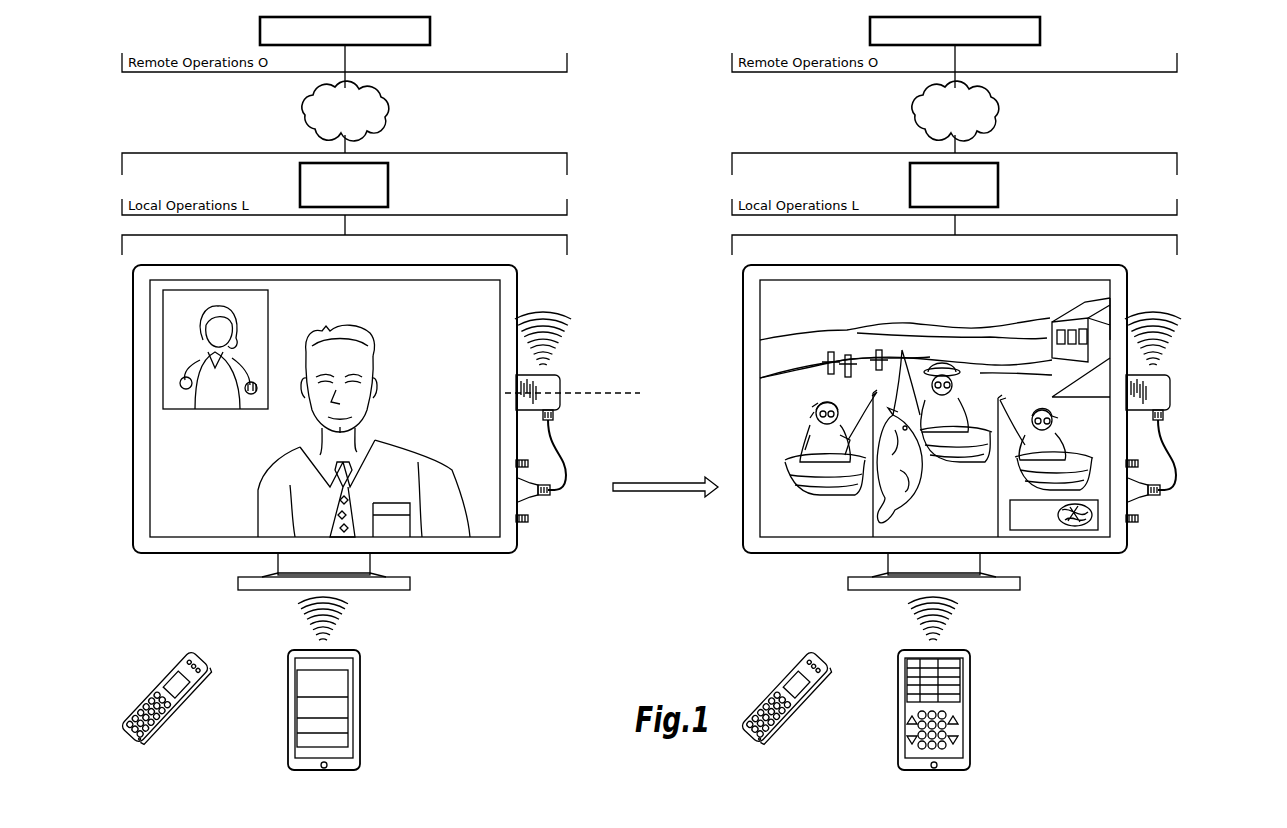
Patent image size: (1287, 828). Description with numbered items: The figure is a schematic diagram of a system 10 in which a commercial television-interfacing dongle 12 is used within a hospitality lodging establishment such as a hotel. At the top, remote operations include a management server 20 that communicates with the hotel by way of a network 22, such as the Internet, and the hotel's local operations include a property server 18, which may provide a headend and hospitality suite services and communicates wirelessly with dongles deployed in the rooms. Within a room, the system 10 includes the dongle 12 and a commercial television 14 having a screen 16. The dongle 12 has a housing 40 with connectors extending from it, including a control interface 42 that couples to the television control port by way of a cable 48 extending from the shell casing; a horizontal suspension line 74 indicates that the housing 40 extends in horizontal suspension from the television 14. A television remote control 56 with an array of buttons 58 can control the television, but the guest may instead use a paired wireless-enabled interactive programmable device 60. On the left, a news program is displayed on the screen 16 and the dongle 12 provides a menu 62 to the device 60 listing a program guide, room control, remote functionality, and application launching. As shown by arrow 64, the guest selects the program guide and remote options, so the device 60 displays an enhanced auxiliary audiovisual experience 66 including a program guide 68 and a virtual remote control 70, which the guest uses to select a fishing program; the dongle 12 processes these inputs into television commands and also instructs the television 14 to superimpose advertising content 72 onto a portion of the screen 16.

The system 10 is at (605, 305).
The commercial television-interfacing dongle 12 is at (562, 384).
The commercial television 14 is at (518, 284).
The screen 16 is at (290, 313).
The property server 18 is at (389, 190).
The management server 20 is at (431, 31).
The network 22 is at (387, 107).
The housing 40 is at (556, 401).
The control interface 42 is at (527, 499).
The cable 48 is at (558, 447).
The television remote control 56 is at (471, 684).
The array of buttons 58 is at (162, 691).
The wireless-enabled interactive programmable device 60 is at (362, 706).
The menu 62 is at (346, 680).
The arrow 64 is at (655, 494).
The enhanced auxiliary audiovisual experience 66 is at (935, 680).
The program guide 68 is at (900, 680).
The virtual remote control 70 is at (899, 730).
The advertising content 72 is at (1074, 537).
The horizontal suspension line 74 is at (630, 397).